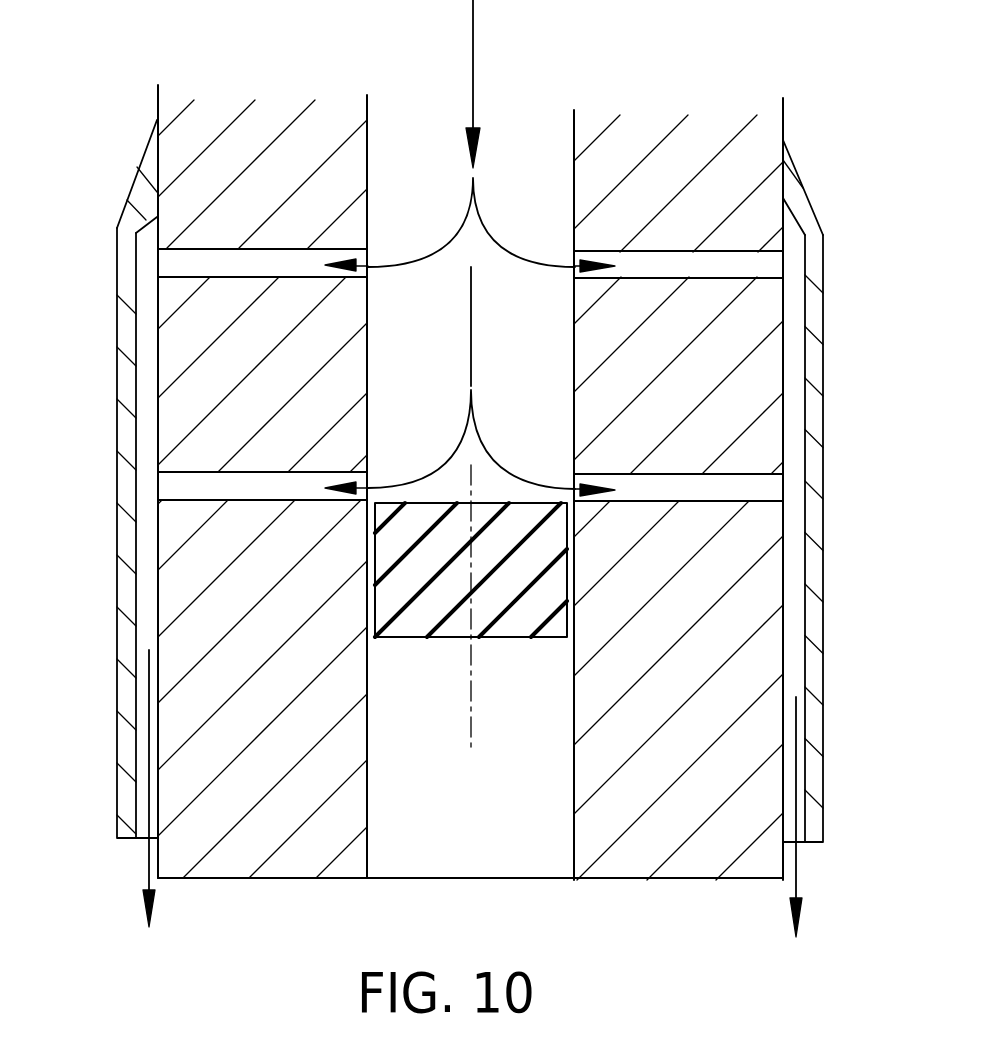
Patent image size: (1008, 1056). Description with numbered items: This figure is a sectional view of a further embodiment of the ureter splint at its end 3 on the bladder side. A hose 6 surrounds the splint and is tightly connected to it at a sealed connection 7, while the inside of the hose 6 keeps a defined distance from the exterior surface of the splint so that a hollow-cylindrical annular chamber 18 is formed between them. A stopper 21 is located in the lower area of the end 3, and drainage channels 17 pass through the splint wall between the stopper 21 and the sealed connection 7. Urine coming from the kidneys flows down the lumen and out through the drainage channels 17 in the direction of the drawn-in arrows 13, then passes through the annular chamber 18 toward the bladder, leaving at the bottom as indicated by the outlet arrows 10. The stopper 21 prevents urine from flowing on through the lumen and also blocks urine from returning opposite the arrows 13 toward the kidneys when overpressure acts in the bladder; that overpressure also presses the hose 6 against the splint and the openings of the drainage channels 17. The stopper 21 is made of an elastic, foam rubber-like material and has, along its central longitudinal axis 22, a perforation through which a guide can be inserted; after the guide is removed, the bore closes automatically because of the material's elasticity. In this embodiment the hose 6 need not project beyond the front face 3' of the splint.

The end on the bladder side 3 is at (422, 482).
The front face of the ureter splint 3' is at (470, 915).
The hose 6 is at (822, 400).
The sealed connection 7 is at (145, 170).
The outlet gas flow 10 is at (140, 857).
The arrows 13 is at (475, 33).
The drainage channels 17 is at (207, 263).
The hollow-cylindrical chamber 18 is at (140, 426).
The stopper 21 is at (440, 598).
The central longitudinal axis 22 is at (473, 707).